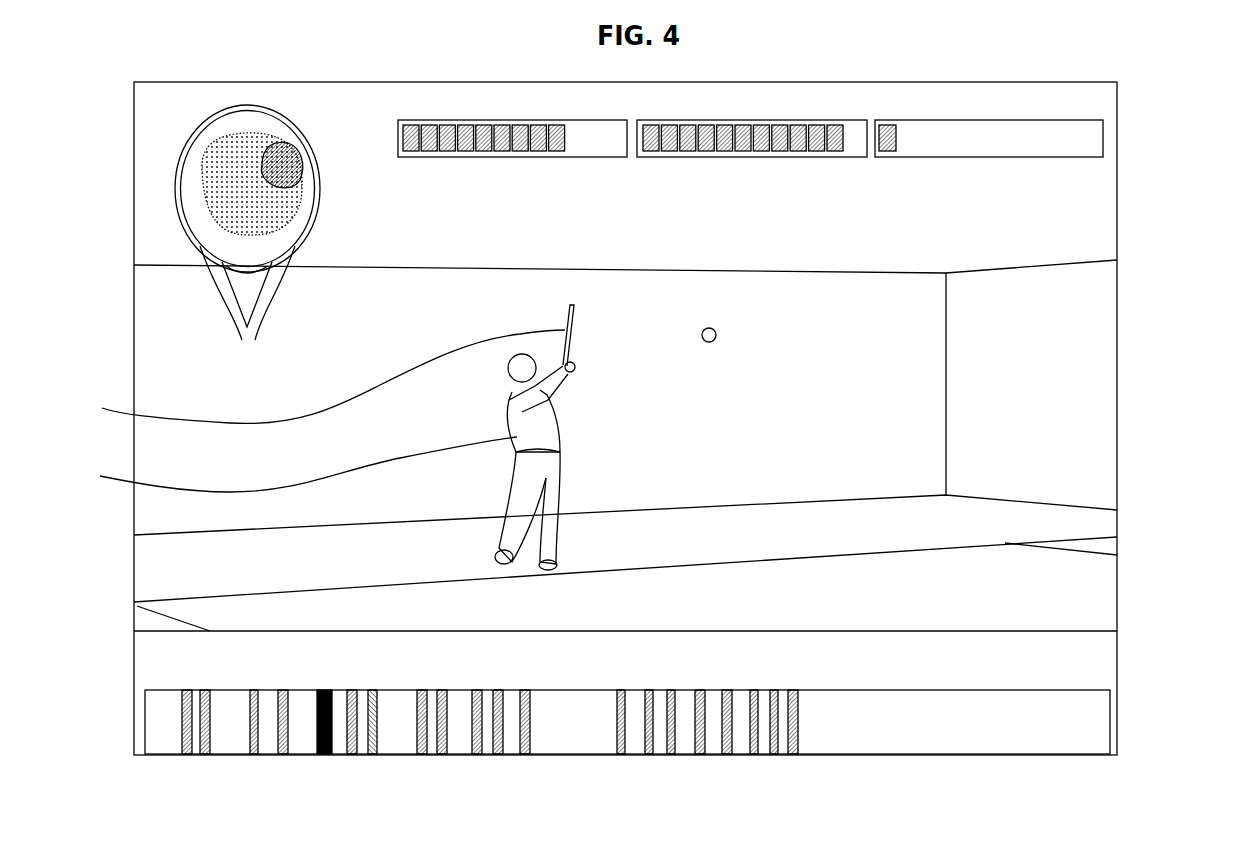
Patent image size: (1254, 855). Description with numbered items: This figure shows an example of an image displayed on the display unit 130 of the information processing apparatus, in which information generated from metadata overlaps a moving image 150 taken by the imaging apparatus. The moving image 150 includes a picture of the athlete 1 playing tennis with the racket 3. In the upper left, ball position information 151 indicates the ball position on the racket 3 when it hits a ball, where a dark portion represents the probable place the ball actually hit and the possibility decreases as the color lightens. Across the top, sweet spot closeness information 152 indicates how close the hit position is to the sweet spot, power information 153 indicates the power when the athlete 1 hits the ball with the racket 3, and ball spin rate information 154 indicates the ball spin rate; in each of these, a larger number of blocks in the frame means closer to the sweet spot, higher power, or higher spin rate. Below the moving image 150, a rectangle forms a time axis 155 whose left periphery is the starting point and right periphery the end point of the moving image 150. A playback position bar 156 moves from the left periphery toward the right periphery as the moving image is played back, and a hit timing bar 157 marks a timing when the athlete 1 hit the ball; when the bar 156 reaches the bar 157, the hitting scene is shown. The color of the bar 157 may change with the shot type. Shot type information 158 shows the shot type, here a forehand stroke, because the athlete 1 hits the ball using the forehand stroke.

The athlete 1 is at (331, 462).
The racket 3 is at (331, 364).
The display unit 130 is at (1083, 80).
The moving image 150 is at (1086, 216).
The ball position information 151 is at (246, 102).
The sweet spot closeness information 152 is at (515, 95).
The power information 153 is at (753, 95).
The ball spin rate information 154 is at (990, 93).
The time axis 155 is at (1113, 718).
The playback position bar 156 is at (332, 752).
The hit timing bar 157 is at (190, 752).
The shot type information 158 is at (168, 327).